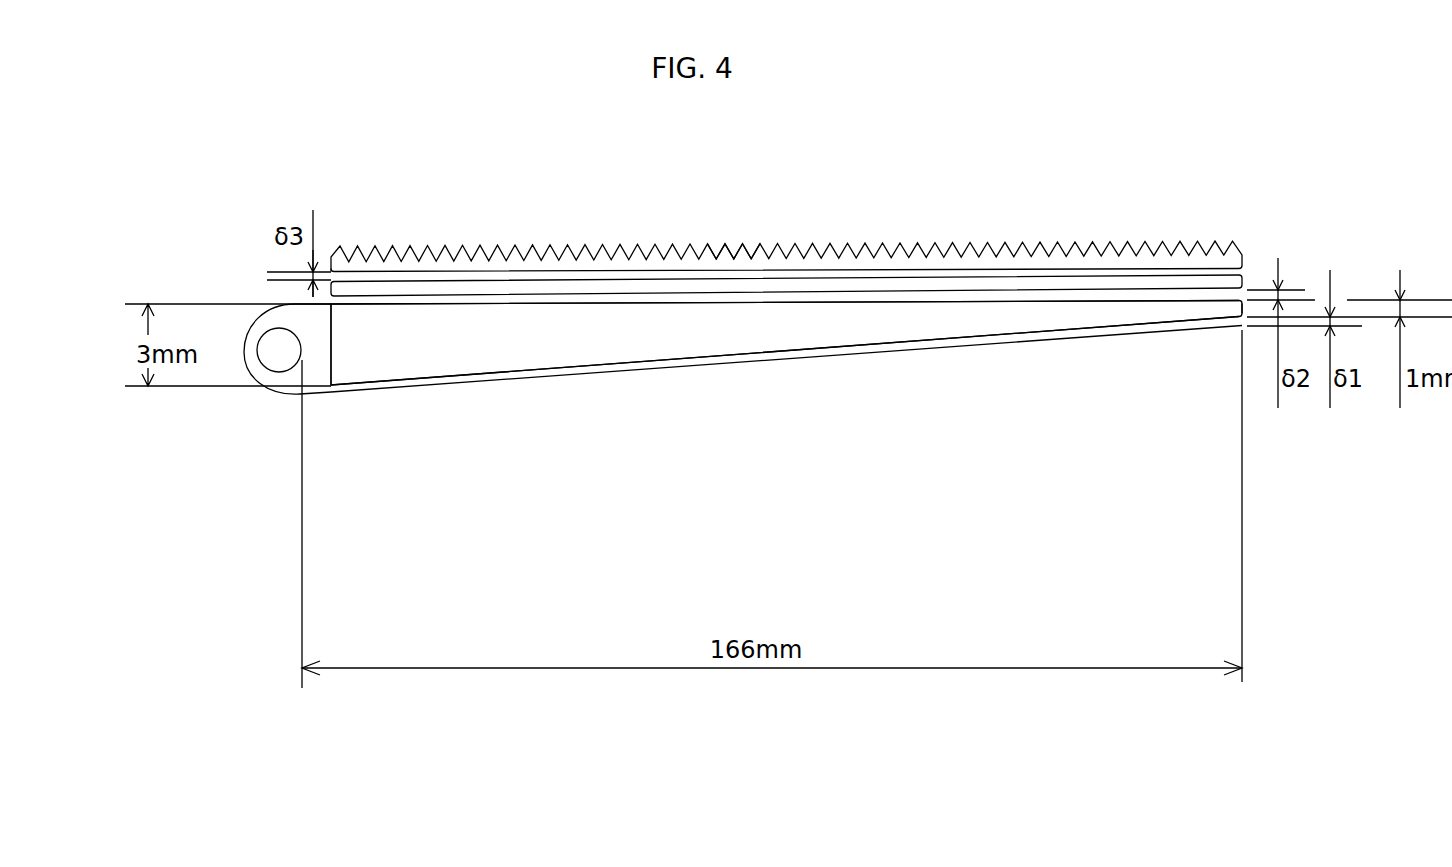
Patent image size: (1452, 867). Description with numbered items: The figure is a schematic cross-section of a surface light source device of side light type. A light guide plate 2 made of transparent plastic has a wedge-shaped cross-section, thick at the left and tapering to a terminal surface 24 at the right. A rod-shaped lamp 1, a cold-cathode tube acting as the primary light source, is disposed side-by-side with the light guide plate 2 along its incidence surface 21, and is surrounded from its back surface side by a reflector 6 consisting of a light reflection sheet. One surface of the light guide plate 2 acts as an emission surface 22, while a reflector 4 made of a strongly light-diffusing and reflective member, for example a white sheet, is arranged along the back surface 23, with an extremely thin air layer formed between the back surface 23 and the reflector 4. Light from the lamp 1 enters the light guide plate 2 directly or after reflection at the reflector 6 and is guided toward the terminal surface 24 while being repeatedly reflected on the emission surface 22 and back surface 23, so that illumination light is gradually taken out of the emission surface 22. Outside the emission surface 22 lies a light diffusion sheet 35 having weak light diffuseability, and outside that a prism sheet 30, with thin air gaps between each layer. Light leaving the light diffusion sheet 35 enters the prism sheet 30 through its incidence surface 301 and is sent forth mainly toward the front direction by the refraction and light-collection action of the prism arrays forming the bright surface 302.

The rod-shaped lamp 1 is at (279, 357).
The light guide plate 2 is at (843, 328).
The reflector 4 is at (540, 380).
The reflector 6 is at (245, 338).
The incidence surface 21 is at (331, 338).
The emission surface 22 is at (538, 294).
The back surface 23 is at (720, 362).
The terminal surface 24 is at (1242, 310).
The prism sheet 30 is at (708, 253).
The incidence surface of prism sheet 301 is at (615, 271).
The bright surface 302 is at (753, 246).
The light diffusion sheet 35 is at (912, 285).